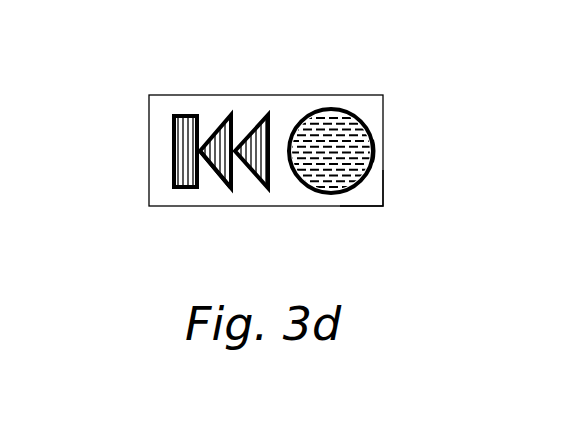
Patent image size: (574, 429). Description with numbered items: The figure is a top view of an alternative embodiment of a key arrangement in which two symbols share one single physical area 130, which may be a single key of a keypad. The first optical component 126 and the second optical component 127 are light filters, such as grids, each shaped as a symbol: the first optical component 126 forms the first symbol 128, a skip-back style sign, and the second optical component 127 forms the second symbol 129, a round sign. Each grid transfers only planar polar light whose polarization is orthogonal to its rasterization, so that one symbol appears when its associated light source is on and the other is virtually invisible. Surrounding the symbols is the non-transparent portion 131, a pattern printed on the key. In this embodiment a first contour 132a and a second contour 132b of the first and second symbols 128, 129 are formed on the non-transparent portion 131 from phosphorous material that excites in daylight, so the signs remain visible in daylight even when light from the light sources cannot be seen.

The first optical component 126 is at (181, 172).
The second optical component 127 is at (317, 177).
The first symbol 128 is at (205, 108).
The second symbol 129 is at (372, 122).
The single physical area 130 is at (148, 108).
The non-transparent portion 131 is at (373, 195).
The first contour 132a is at (228, 182).
The second contour 132b is at (373, 154).